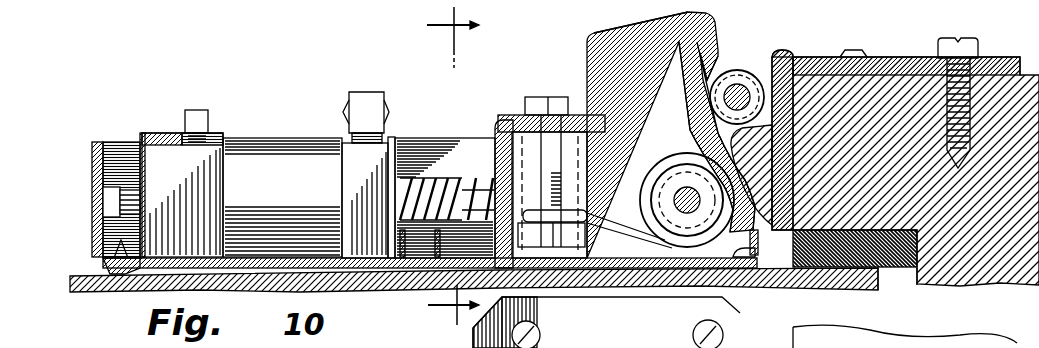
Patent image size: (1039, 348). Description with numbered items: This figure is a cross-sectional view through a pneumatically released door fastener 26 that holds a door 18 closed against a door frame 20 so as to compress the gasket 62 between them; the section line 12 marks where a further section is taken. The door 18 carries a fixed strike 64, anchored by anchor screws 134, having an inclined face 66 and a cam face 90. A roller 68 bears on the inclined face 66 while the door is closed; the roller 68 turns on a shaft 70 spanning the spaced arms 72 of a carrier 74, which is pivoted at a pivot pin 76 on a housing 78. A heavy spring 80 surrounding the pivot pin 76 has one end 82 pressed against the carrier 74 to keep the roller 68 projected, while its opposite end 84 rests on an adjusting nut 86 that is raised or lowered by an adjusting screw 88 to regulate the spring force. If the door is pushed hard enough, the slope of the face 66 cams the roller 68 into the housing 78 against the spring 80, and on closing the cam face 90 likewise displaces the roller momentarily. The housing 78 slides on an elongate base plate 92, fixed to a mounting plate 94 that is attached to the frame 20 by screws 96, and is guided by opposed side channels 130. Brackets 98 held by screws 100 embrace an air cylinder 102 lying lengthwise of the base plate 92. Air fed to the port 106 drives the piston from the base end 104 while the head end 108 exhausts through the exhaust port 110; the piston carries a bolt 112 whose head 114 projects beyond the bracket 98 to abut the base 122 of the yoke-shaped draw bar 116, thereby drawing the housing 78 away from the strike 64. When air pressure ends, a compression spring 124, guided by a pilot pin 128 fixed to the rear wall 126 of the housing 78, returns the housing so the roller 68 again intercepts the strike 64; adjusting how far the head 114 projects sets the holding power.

The section line 12 is at (426, 166).
The door 18 is at (1013, 274).
The door frame 20 is at (852, 286).
The door fastener 26 is at (583, 38).
The gasket 62 is at (895, 268).
The strike 64 is at (788, 50).
The inclined face 66 is at (760, 94).
The roller 68 is at (745, 70).
The shaft 70 is at (737, 88).
The arms 72 is at (704, 66).
The carrier 74 is at (683, 78).
The pivot pin 76 is at (685, 190).
The housing 78 is at (643, 25).
The spring 80 is at (655, 182).
The spring end 82 is at (690, 100).
The opposite spring end 84 is at (567, 213).
The adjusting nut 86 is at (585, 240).
The adjusting screw 88 is at (549, 97).
The cam face 90 is at (766, 212).
The base plate 92 is at (745, 254).
The mounting plate 94 is at (727, 264).
The screws 96 is at (540, 328).
The brackets 98 is at (142, 176).
The screws 100 is at (121, 258).
The air cylinder 102 is at (279, 160).
The base end 104 is at (397, 177).
The port 106 is at (376, 108).
The head end 108 is at (148, 152).
The exhaust port 110 is at (196, 110).
The bolt 112 is at (130, 197).
The bolt head 114 is at (108, 205).
The draw bar 116 is at (475, 142).
The base of the yoke 122 is at (92, 185).
The compression spring 124 is at (450, 178).
The rear wall 126 is at (503, 125).
The pilot pin 128 is at (479, 195).
The side channels 130 is at (606, 322).
The anchor screws 134 is at (862, 52).